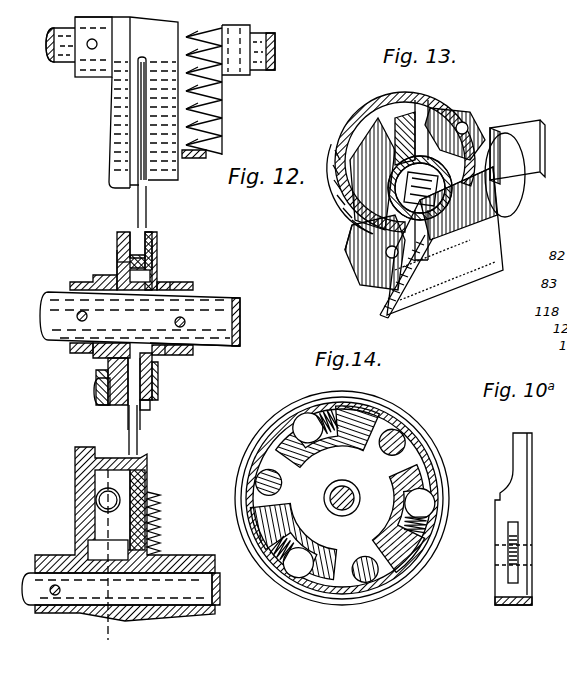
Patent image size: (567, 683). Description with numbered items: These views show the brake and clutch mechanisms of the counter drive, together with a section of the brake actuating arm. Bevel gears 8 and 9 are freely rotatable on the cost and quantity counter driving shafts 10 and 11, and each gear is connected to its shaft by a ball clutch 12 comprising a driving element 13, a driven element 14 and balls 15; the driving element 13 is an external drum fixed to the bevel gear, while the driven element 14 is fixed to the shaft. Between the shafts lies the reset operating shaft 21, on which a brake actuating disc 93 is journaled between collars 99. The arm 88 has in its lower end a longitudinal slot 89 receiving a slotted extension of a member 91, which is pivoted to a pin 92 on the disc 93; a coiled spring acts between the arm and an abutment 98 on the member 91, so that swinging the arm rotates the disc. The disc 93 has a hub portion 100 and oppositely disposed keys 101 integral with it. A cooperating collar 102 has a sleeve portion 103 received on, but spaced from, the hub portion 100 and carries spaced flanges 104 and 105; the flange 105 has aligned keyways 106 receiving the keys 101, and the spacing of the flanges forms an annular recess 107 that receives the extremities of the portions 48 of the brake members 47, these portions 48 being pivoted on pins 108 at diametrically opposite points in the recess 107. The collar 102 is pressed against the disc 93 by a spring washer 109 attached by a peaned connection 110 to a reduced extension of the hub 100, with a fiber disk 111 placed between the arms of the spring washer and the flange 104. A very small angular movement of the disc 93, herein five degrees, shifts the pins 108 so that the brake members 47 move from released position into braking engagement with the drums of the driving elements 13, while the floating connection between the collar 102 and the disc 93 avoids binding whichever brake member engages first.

In FIG. 12, the bevel gear 8 is at (223, 126).
In FIG. 12, the bevel gear 9 is at (160, 501).
In FIG. 12, the cost counter driving shaft 10 is at (262, 72).
In FIG. 12, the quantity counter driving shaft 11 is at (216, 606).
In FIG. 14, the quantity counter driving shaft 11 is at (333, 498).
In FIG. 12, the ball clutch 12 is at (112, 91).
In FIG. 12, the driving element 13 is at (146, 32).
In FIG. 14, the driving element 13 is at (418, 440).
In FIG. 12, the driven element 14 is at (112, 105).
In FIG. 14, the driven element 14 is at (412, 424).
In FIG. 14, the balls 15 is at (303, 415).
In FIG. 12, the reset operating shaft 21 is at (215, 344).
In FIG. 12, the brake member 47 is at (142, 123).
In FIG. 13, the brake member 47 is at (395, 295).
In FIG. 12, the portion of braking member 48 is at (120, 262).
In FIG. 13, the portion of braking member 48 is at (375, 250).
In FIG. 10A, the arm 88 is at (517, 462).
In FIG. 10A, the slot 89 is at (508, 527).
In FIG. 12, the member 91 is at (100, 372).
In FIG. 13, the member 91 is at (518, 135).
In FIG. 10A, the member 91 is at (508, 552).
In FIG. 12, the pin 92 is at (99, 390).
In FIG. 12, the brake actuating disc 93 is at (110, 294).
In FIG. 13, the brake actuating disc 93 is at (408, 93).
In FIG. 13, the abutment 98 is at (492, 135).
In FIG. 12, the collars 99 is at (190, 288).
In FIG. 12, the hub portion 100 is at (95, 284).
In FIG. 13, the hub portion 100 is at (388, 176).
In FIG. 12, the keys 101 is at (120, 266).
In FIG. 13, the keys 101 is at (395, 118).
In FIG. 12, the collar 102 is at (153, 255).
In FIG. 12, the sleeve portion 103 is at (150, 276).
In FIG. 13, the sleeve portion 103 is at (462, 190).
In FIG. 12, the flange 104 is at (153, 246).
In FIG. 13, the flange 104 is at (455, 242).
In FIG. 12, the flange 105 is at (120, 245).
In FIG. 13, the flange 105 is at (390, 130).
In FIG. 12, the keyways 106 is at (133, 238).
In FIG. 13, the keyways 106 is at (402, 108).
In FIG. 12, the annular recess 107 is at (140, 238).
In FIG. 13, the pins 108 is at (456, 125).
In FIG. 12, the spring washer 109 is at (159, 392).
In FIG. 12, the peaned connection 110 is at (160, 353).
In FIG. 12, the fiber disk 111 is at (150, 405).